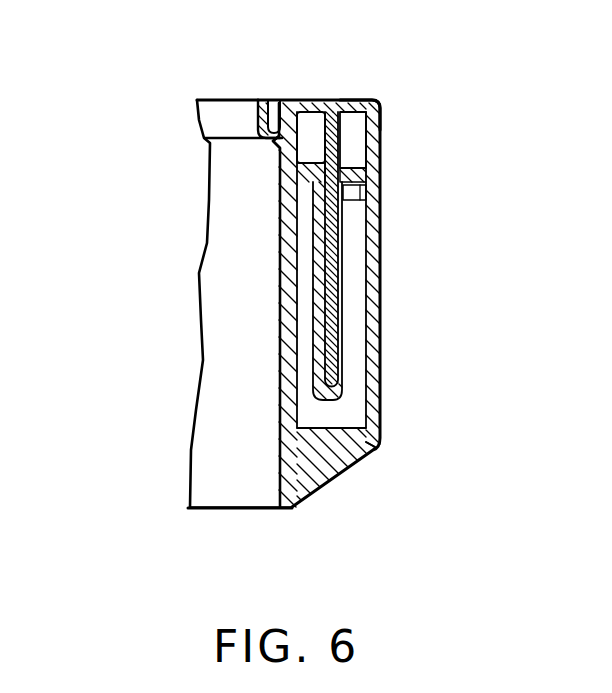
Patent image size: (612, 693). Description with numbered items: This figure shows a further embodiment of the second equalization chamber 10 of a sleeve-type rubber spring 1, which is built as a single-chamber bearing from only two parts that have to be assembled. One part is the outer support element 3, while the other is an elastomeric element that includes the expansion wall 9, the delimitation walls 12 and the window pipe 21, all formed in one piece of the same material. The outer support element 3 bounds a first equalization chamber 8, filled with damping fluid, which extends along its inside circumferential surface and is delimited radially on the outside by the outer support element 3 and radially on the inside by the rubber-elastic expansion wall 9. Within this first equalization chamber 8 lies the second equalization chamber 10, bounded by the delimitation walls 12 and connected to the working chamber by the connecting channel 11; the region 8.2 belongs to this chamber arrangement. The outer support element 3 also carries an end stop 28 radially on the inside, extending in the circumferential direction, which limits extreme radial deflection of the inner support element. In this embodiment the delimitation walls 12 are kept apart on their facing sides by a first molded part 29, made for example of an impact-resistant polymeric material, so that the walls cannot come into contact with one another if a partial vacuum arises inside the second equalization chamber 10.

The sleeve-type rubber spring 1 is at (360, 498).
The outer support element 3 is at (380, 100).
The first equalization chamber 8 is at (358, 317).
The receiving chamber 8.2 is at (332, 417).
The expansion wall 9 is at (280, 267).
The second equalization chamber 10 is at (348, 284).
The connecting channel 11 is at (318, 125).
The delimitation walls 12 is at (313, 282).
The window pipe 21 is at (283, 178).
The end stop 28 is at (258, 125).
The first molded part 29 is at (340, 150).